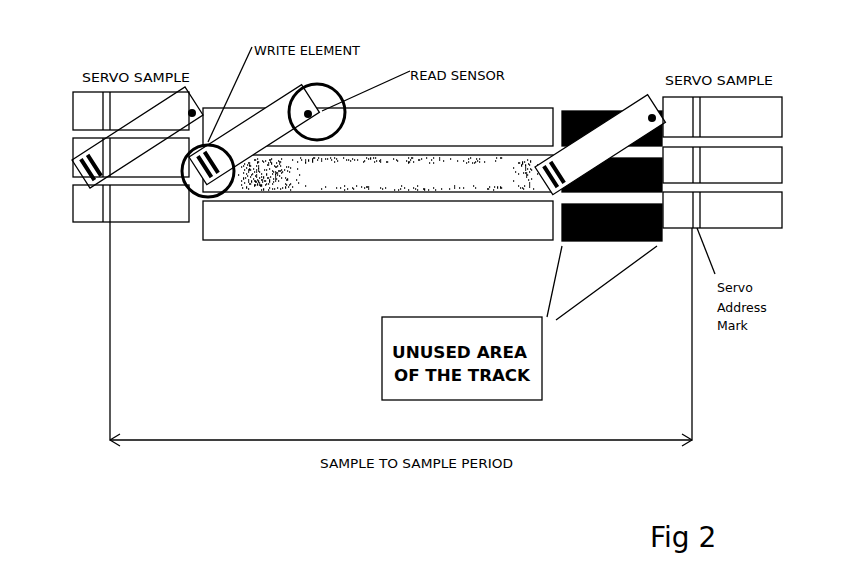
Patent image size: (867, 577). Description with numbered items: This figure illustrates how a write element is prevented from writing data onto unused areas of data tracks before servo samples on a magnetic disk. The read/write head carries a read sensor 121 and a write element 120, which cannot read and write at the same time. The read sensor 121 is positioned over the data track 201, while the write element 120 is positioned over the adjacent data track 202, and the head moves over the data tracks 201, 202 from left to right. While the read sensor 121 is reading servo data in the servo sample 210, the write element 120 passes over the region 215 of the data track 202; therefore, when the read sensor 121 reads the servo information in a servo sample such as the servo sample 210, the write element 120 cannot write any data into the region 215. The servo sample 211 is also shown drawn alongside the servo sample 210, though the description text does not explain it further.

The write element 120 is at (195, 203).
The read sensor 121 is at (340, 99).
The data track 201 is at (534, 117).
The data track 202 is at (288, 184).
The servo sample 210 is at (776, 115).
The servo sample 211 is at (770, 170).
The region 215 is at (673, 203).